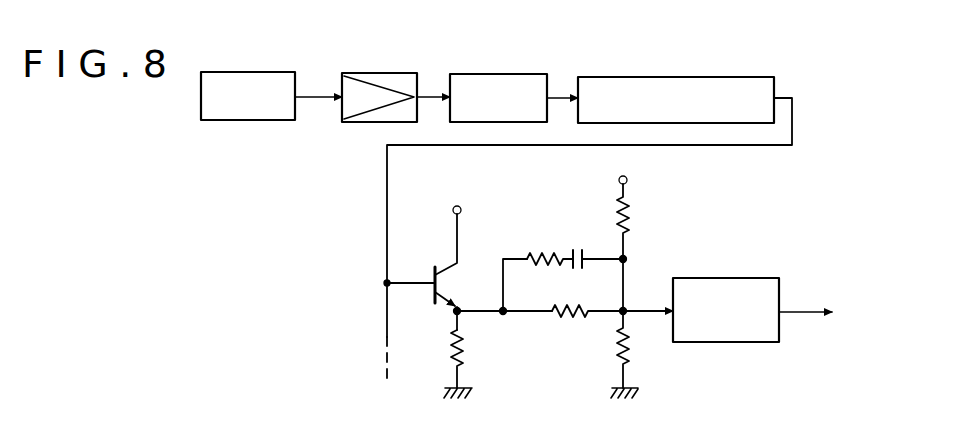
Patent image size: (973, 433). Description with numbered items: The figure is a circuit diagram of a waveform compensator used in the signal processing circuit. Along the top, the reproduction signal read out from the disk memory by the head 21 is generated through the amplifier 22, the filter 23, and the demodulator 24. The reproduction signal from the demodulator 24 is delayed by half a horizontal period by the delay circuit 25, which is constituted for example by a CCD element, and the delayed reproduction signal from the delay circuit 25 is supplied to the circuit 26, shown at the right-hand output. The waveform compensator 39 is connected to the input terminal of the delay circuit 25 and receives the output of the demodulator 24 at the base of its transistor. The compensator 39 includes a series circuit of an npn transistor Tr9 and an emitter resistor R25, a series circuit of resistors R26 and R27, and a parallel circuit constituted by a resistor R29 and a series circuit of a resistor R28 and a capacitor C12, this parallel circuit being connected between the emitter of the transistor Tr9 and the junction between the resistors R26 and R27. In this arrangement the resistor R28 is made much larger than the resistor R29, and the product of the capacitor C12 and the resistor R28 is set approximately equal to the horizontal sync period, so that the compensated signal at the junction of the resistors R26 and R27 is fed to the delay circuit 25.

The head 21 is at (240, 72).
The amplifier 22 is at (356, 73).
The filter 23 is at (482, 74).
The demodulator 24 is at (643, 77).
The 0.5H delay circuit 25 is at (712, 278).
The circuit 26 is at (887, 311).
The waveform compensator 39 is at (426, 227).
The npn transistor Tr9 is at (446, 286).
The emitter resistor R25 is at (470, 350).
The resistor R26 is at (637, 209).
The resistor R27 is at (636, 349).
The resistor R28 is at (536, 253).
The resistor R29 is at (574, 321).
The capacitor C12 is at (577, 242).